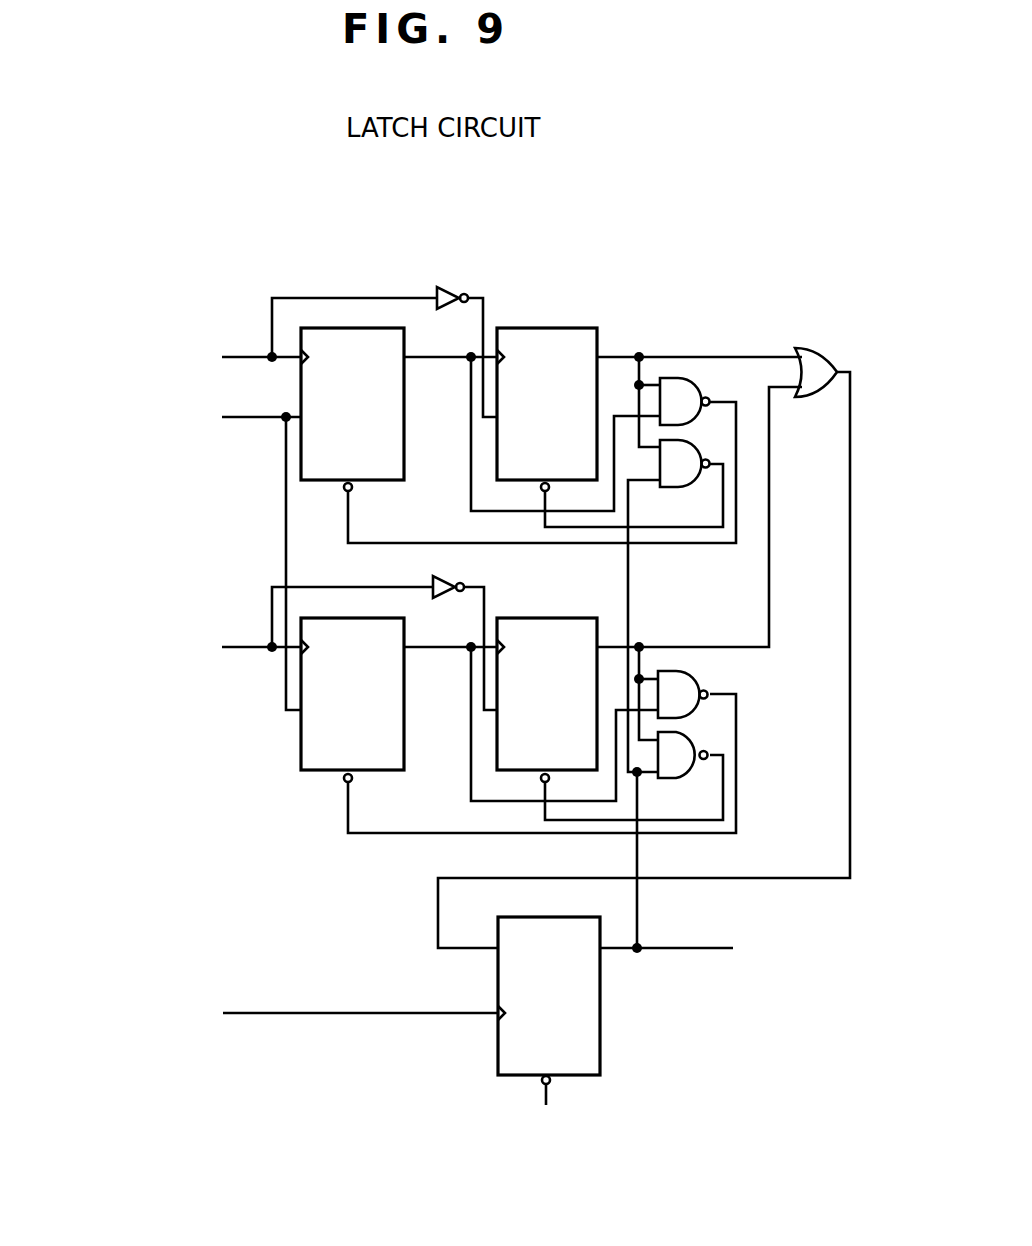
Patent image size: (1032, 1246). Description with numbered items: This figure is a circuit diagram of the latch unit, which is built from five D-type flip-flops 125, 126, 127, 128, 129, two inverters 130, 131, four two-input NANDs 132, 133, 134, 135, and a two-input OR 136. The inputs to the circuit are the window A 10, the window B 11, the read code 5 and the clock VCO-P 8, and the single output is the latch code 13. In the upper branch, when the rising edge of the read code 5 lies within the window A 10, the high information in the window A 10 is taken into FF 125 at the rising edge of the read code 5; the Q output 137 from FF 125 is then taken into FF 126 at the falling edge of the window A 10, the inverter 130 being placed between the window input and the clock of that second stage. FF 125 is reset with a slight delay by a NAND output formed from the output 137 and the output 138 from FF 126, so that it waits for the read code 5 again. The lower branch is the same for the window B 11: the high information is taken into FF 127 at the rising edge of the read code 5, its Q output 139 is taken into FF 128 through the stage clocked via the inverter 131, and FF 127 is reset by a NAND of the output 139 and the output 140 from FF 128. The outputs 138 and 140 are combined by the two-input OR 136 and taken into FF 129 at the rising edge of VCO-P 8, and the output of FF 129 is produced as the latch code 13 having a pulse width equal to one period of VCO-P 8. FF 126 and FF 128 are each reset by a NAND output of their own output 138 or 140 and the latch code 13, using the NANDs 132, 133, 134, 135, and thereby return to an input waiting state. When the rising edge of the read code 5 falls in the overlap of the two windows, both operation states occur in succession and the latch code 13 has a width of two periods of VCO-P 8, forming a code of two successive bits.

The read code 5 is at (182, 432).
The VCO-P 8 is at (229, 980).
The window A 10 is at (180, 340).
The window B 11 is at (167, 632).
The latch code 13 is at (782, 964).
The D-type flip-flop 125 is at (372, 317).
The D-type flip-flop 126 is at (560, 325).
The D-type flip-flop 127 is at (367, 613).
The D-type flip-flop 128 is at (562, 613).
The D-type flip-flop 129 is at (557, 910).
The inverter 130 is at (450, 292).
The inverter 131 is at (443, 578).
The two-input NAND 132 is at (697, 385).
The two-input NAND 133 is at (683, 490).
The two-input NAND 134 is at (702, 677).
The two-input NAND 135 is at (692, 777).
The two-input OR 136 is at (820, 345).
The Q output 137 is at (419, 356).
The output 138 is at (693, 356).
The Q output 139 is at (440, 650).
The output 140 is at (694, 646).